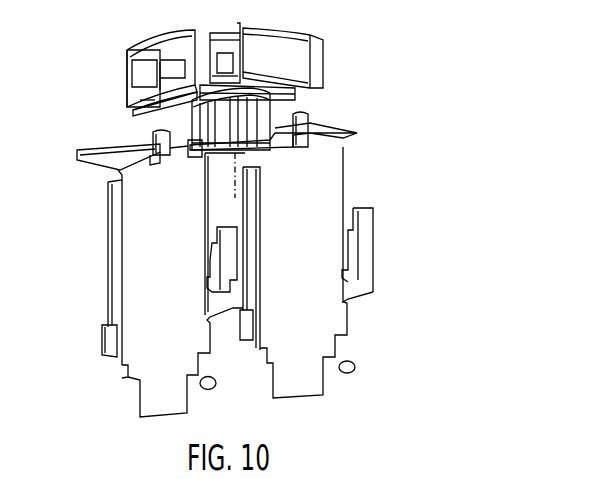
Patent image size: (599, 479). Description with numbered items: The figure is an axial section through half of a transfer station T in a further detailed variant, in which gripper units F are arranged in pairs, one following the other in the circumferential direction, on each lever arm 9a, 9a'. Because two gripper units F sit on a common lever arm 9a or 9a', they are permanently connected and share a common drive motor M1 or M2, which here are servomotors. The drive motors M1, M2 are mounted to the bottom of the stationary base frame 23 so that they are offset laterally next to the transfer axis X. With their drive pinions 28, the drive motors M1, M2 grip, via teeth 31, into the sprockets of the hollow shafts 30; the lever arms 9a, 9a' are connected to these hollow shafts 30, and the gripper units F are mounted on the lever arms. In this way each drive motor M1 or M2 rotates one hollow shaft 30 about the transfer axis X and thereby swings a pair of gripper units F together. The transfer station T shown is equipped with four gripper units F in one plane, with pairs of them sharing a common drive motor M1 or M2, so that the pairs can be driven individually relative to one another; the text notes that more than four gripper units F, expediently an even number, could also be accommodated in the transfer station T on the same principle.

The gripper unit F is at (118, 67).
The transfer station T is at (353, 77).
The lever arm 9a is at (144, 83).
The lever arm 9a' is at (296, 96).
The teeth 31 is at (152, 142).
The stationary base frame 23 is at (80, 153).
The drive pinion 28 is at (303, 117).
The hollow shaft 30 is at (197, 158).
The transfer axis X is at (229, 187).
The drive motor M1 is at (330, 190).
The drive motor M2 is at (127, 240).